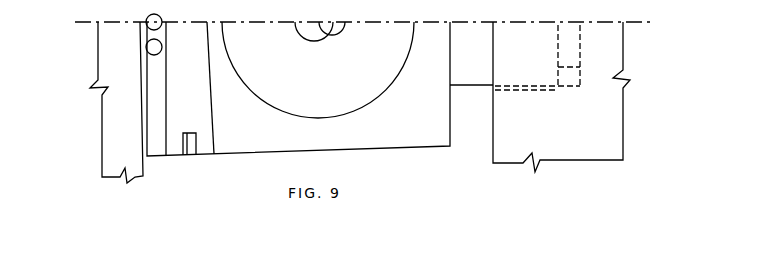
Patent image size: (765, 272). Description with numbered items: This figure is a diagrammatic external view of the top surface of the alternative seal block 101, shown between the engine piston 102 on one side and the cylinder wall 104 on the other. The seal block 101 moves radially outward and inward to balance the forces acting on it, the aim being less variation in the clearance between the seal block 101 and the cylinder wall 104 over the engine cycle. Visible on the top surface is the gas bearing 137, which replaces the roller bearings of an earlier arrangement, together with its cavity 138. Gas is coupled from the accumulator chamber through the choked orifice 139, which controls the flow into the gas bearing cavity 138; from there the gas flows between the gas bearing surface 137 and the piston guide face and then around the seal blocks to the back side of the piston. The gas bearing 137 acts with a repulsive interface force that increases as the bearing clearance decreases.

The seal block 101 is at (372, 148).
The engine piston 102 is at (625, 132).
The cylinder wall 104 is at (141, 112).
The gas bearing 137 is at (298, 79).
The gas bearing cavity 138 is at (300, 35).
The choked orifice 139 is at (336, 31).